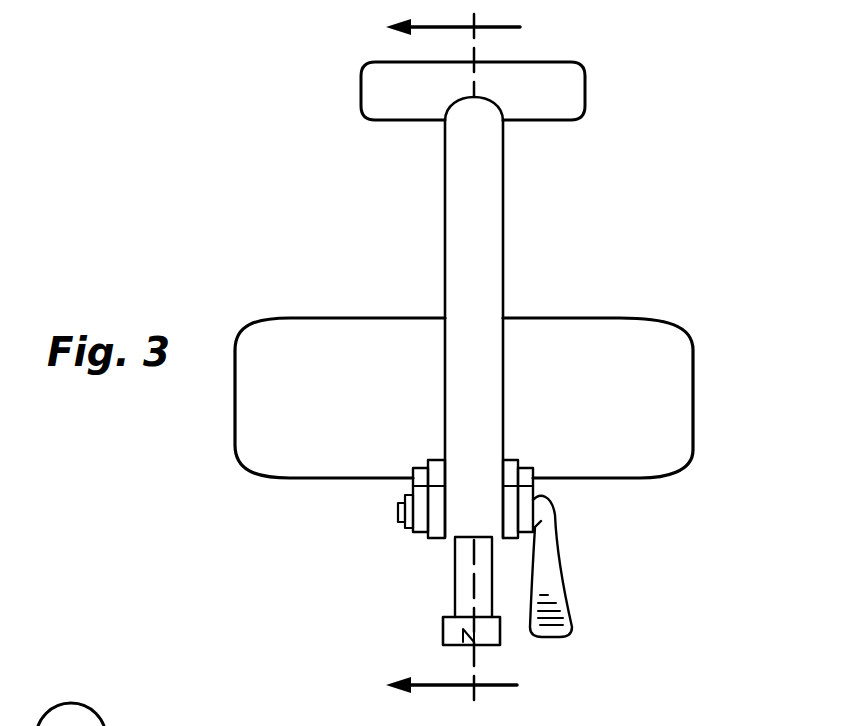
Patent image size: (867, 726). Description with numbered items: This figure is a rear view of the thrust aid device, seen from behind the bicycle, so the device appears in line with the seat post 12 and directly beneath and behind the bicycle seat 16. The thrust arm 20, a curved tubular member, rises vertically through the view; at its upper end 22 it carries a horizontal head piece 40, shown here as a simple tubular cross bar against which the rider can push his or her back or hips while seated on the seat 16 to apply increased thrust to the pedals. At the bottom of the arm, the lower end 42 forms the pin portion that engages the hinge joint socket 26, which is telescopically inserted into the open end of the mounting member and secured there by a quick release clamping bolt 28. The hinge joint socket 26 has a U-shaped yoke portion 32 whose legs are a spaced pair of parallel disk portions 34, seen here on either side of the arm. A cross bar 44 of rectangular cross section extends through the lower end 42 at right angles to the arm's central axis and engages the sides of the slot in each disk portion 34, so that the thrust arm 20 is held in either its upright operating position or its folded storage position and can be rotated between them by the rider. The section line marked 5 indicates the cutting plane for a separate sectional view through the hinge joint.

The section line 5- 5 is at (434, 359).
The seat post 12 is at (455, 578).
The bicycle seat 16 is at (617, 318).
The thrust arm 20 is at (450, 243).
The upper end 22 is at (503, 143).
The hinge joint socket 26 is at (387, 521).
The quick release clamping bolt 28 is at (560, 625).
The yoke portion 32 is at (508, 506).
The disk portions 34 is at (425, 538).
The head piece 40 is at (573, 87).
The lower end 42 is at (465, 524).
The cross bar 44 is at (528, 470).